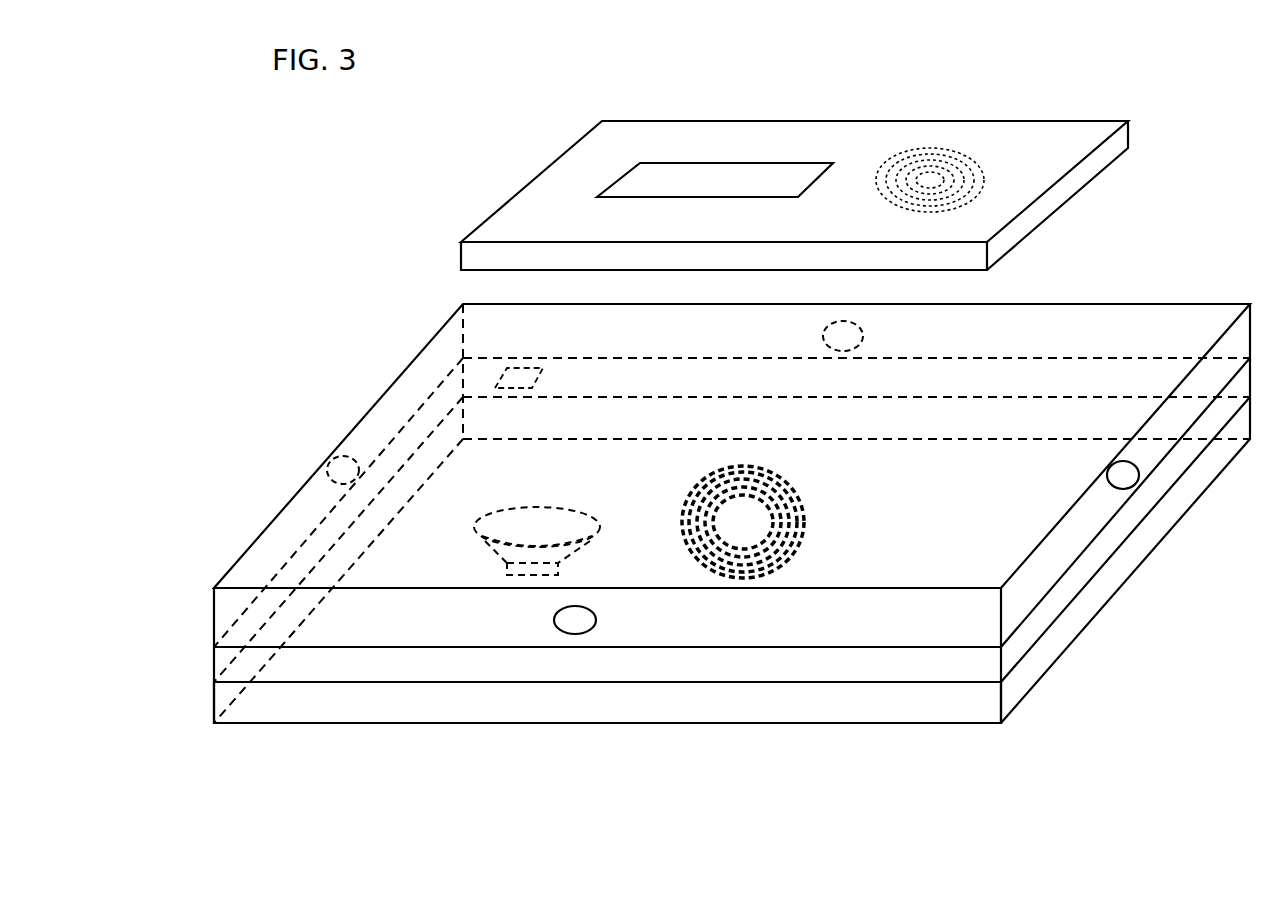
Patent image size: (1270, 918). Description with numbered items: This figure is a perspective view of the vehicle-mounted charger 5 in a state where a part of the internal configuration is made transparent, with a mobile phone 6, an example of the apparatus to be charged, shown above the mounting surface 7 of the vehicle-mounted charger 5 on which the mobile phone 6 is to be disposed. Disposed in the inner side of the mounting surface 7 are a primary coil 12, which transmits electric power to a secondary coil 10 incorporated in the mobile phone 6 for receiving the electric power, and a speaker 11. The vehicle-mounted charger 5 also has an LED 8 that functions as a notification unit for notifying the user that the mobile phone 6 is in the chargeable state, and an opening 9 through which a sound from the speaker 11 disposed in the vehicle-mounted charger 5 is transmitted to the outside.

The vehicle-mounted charger 5 is at (307, 364).
The mobile phone 6 is at (557, 157).
The mounting surface 7 is at (1058, 325).
The LED 8 is at (340, 663).
The opening 9 is at (326, 470).
The secondary coil 10 is at (938, 145).
The speaker 11 is at (493, 512).
The primary coil 12 is at (743, 587).